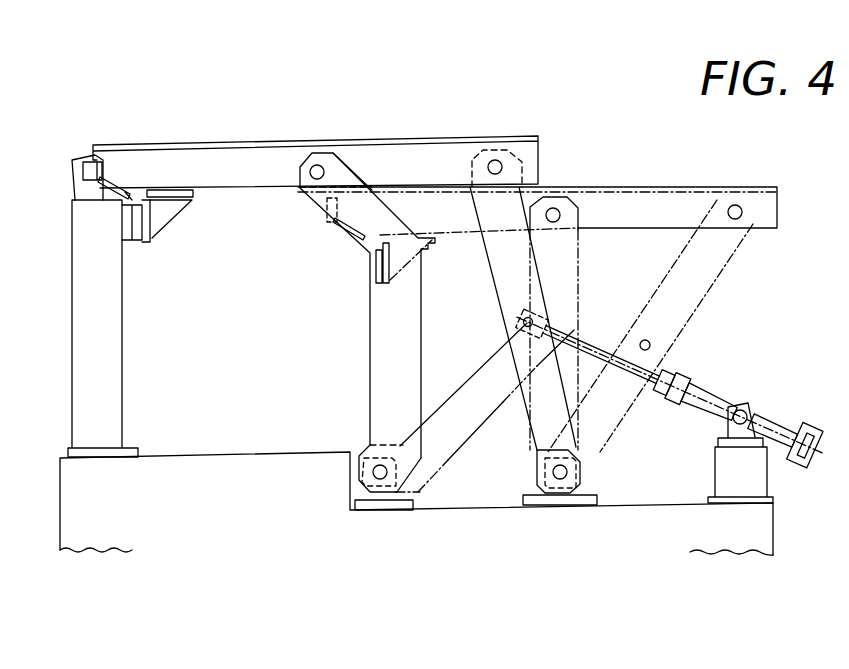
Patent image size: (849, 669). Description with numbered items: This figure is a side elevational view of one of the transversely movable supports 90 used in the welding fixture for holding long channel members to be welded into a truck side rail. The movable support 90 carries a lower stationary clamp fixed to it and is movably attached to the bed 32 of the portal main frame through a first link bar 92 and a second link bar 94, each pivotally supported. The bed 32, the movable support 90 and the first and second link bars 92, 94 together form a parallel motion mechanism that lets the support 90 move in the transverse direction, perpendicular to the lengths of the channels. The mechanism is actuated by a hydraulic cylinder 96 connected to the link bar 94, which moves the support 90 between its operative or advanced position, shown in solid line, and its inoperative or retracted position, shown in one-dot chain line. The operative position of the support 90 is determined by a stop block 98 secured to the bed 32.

The first transversely movable support 90 is at (233, 145).
The stop block 98 is at (122, 316).
The first pivotally supported link bar 92 is at (375, 339).
The second pivotally supported link bar 94 is at (500, 272).
The hydraulic cylinder 96 is at (717, 395).
The bed 32 is at (225, 460).